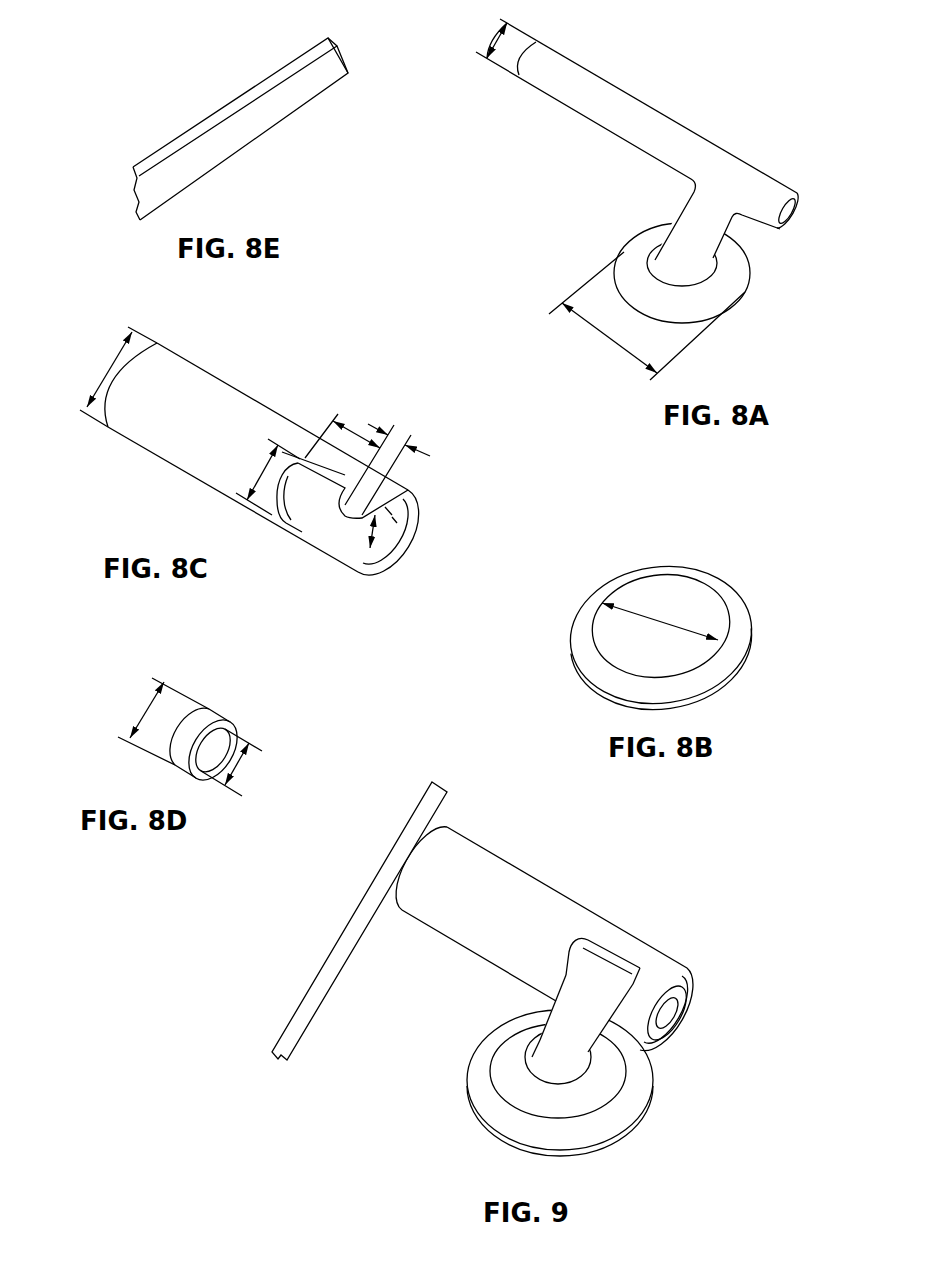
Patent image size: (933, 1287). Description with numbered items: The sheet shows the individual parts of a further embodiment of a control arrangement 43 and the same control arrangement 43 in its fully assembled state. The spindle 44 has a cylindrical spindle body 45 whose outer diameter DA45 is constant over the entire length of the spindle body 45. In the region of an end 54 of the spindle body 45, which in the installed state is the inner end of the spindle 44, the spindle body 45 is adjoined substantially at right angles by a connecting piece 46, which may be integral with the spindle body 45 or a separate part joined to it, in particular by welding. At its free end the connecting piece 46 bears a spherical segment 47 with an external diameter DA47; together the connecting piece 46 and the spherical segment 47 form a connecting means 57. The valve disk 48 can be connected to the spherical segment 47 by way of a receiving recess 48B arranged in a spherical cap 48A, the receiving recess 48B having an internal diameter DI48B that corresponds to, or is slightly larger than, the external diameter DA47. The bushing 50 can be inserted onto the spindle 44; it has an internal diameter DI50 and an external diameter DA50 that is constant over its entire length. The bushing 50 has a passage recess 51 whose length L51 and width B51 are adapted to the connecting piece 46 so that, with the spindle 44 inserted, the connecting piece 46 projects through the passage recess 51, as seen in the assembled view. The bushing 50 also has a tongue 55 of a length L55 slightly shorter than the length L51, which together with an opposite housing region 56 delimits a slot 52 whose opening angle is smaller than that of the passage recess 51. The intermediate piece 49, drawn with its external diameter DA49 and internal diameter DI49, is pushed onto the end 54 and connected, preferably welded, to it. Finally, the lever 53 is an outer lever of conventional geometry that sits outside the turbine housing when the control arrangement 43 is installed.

In FIG. 9, the control arrangement 43 is at (503, 991).
In FIG. 8A, the spindle 44 is at (646, 149).
In FIG. 9, the spindle 44 is at (515, 1018).
In FIG. 8A, the spindle body 45 is at (627, 108).
In FIG. 8A, the connecting piece 46 is at (732, 217).
In FIG. 9, the connecting piece 46 is at (548, 1033).
In FIG. 8A, the spherical segment 47 is at (731, 292).
In FIG. 9, the spherical segment 47 is at (593, 1092).
In FIG. 8B, the valve disk 48 is at (683, 620).
In FIG. 9, the valve disk 48 is at (470, 1118).
In FIG. 8B, the spherical cap 48A is at (735, 600).
In FIG. 8B, the receiving recess 48B is at (620, 651).
In FIG. 8D, the intermediate piece 49 is at (195, 723).
In FIG. 9, the intermediate piece 49 is at (698, 1061).
In FIG. 8C, the bushing 50 is at (261, 471).
In FIG. 9, the bushing 50 is at (580, 979).
In FIG. 8C, the passage recess 51 is at (307, 500).
In FIG. 8C, the slot 52 is at (350, 540).
In FIG. 8E, the lever 53 is at (224, 98).
In FIG. 9, the lever 53 is at (348, 877).
In FIG. 8A, the end 54 is at (775, 190).
In FIG. 9, the end 54 is at (670, 1014).
In FIG. 8C, the tongue 55 is at (374, 496).
In FIG. 8C, the housing region 56 is at (341, 558).
In FIG. 8A, the connecting means 57 is at (730, 296).
In FIG. 8A, the outer diameter of spindle body DA45 is at (498, 37).
In FIG. 8A, the external diameter of spherical segment DA47 is at (607, 336).
In FIG. 8D, the external diameter of intermediate piece DA49 is at (145, 712).
In FIG. 8D, the internal diameter of intermediate piece DI49 is at (236, 770).
In FIG. 8C, the external diameter of bushing DA50 is at (110, 372).
In FIG. 8C, the internal diameter of bushing DI50 is at (383, 532).
In FIG. 8C, the length of passage recess L51 is at (357, 431).
In FIG. 8C, the length of tongue L55 is at (405, 440).
In FIG. 8C, the width of passage recess B51 is at (255, 471).
In FIG. 8B, the internal diameter of receiving recess DI48B is at (668, 627).